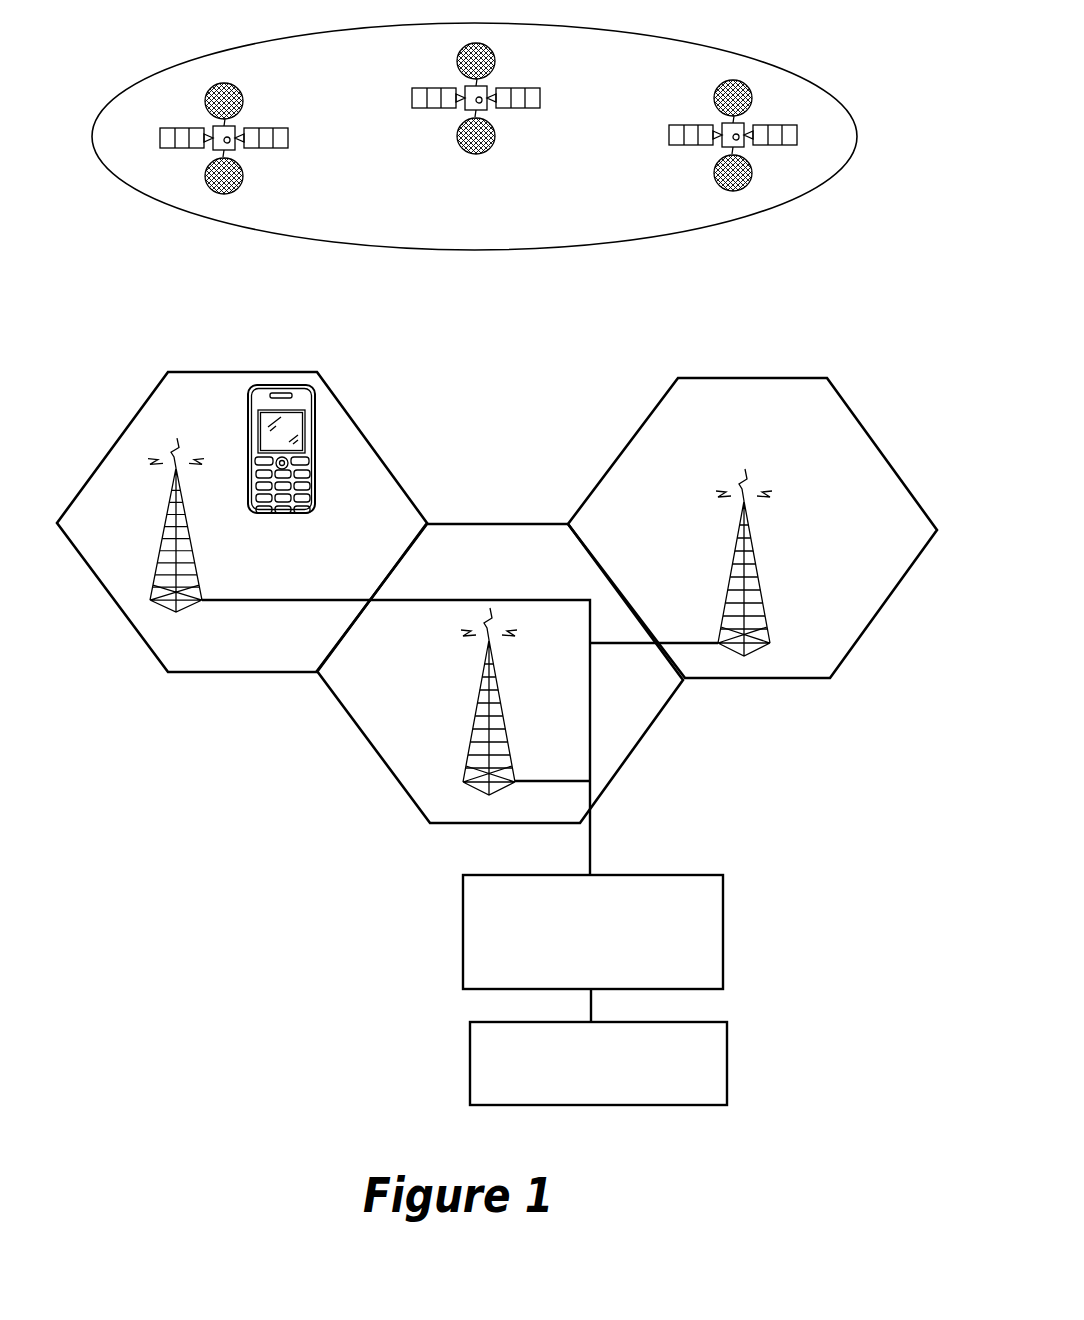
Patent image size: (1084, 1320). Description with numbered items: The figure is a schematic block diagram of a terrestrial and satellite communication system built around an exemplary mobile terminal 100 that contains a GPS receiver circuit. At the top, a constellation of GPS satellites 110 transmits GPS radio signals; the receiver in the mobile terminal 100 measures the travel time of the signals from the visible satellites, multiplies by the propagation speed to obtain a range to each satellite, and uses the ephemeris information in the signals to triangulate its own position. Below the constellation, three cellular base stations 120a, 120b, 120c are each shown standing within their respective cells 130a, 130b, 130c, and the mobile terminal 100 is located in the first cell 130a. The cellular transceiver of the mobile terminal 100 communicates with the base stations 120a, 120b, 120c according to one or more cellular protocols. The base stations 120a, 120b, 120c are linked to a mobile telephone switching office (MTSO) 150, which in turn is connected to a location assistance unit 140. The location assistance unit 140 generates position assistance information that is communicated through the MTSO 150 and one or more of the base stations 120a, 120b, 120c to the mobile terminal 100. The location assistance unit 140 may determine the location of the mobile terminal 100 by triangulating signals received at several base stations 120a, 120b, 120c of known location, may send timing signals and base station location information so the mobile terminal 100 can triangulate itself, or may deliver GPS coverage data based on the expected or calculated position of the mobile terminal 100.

The mobile terminal 100 is at (320, 430).
The constellation of GPS satellites 110 is at (491, 237).
The cellular base station 120a is at (201, 590).
The cellular base station 120b is at (472, 733).
The cellular base station 120c is at (758, 577).
The cell 130a is at (380, 460).
The cell 130b is at (464, 524).
The cell 130c is at (620, 453).
The location assistance unit 140 is at (615, 1087).
The mobile telephone switching office (MTSO) 150 is at (593, 932).